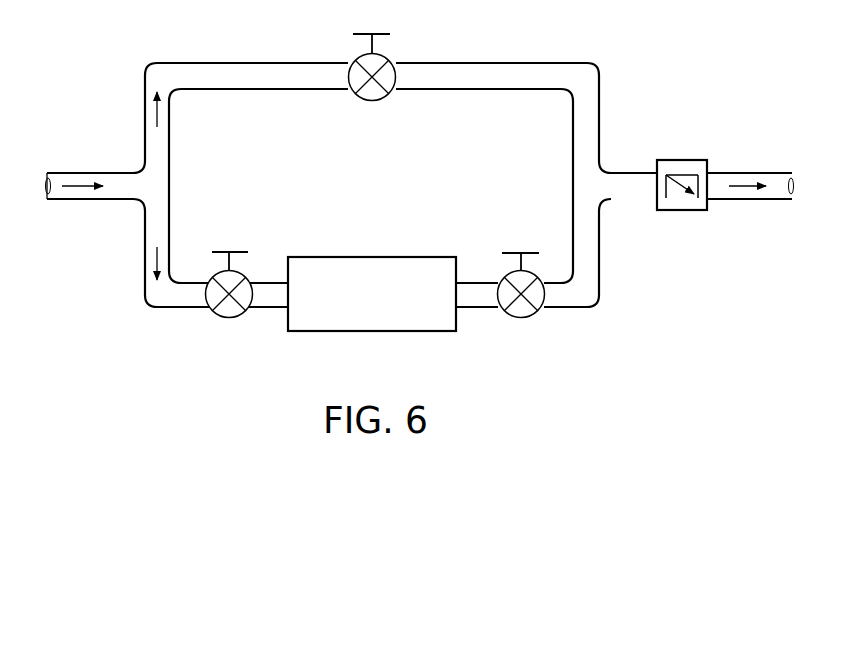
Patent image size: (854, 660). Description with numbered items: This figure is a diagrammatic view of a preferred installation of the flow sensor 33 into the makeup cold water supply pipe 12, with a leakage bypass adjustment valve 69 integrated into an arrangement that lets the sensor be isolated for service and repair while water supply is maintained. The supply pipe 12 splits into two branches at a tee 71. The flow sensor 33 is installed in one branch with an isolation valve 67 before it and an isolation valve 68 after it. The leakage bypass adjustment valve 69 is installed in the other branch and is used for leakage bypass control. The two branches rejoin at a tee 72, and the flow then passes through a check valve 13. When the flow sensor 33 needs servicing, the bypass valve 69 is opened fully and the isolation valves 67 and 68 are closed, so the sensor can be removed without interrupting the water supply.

The makeup cold water supply pipe 12 is at (84, 172).
The check valve 13 is at (703, 211).
The flow sensor 33 is at (358, 310).
The isolation valve 67 is at (240, 318).
The isolation valve 68 is at (536, 318).
The leakage bypass adjustment valve 69 is at (385, 100).
The tee 71 is at (164, 195).
The tee 72 is at (601, 194).